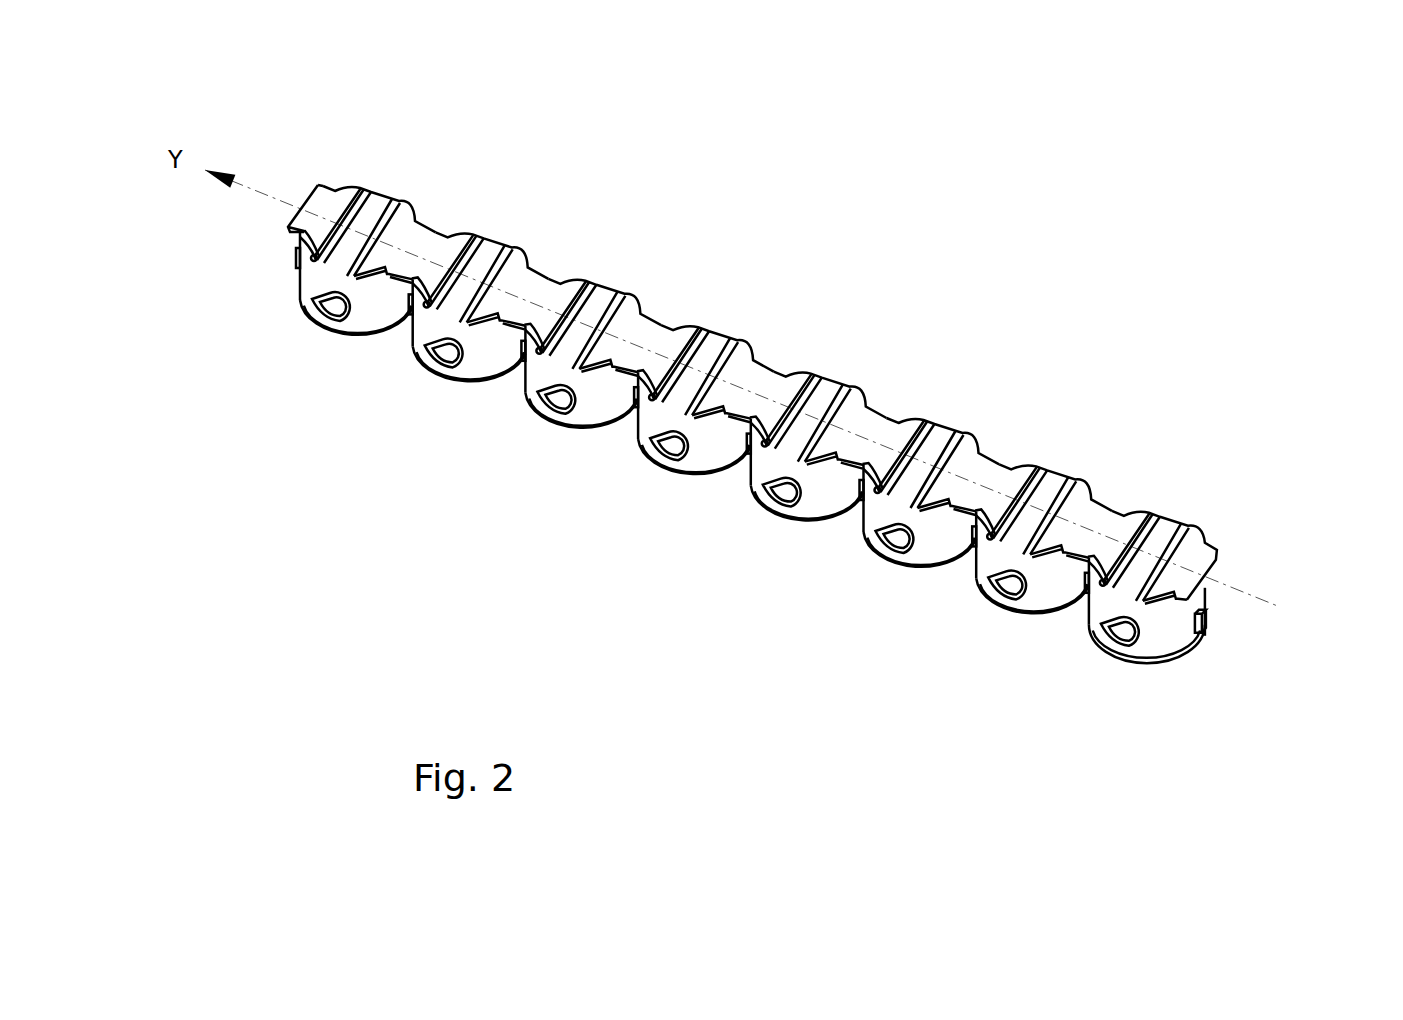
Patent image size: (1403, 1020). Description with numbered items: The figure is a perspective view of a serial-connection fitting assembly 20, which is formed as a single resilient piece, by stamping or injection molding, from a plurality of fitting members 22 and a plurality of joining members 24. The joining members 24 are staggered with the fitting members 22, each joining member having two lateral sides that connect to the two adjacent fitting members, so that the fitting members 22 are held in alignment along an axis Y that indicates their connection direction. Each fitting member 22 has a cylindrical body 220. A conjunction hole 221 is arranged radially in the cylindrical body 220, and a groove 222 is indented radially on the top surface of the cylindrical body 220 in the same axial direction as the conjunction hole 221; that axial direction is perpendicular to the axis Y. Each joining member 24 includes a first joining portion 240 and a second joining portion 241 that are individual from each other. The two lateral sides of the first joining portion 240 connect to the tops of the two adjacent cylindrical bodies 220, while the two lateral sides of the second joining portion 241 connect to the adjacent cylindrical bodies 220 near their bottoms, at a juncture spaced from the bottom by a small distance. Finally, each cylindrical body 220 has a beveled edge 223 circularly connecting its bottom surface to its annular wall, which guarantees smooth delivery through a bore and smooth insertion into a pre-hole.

The serial-connection fitting assembly 20 is at (1083, 188).
The fitting member 22 is at (364, 345).
The joining member 24 is at (1007, 453).
The first joining portion 240 is at (994, 456).
The second joining portion 241 is at (969, 495).
The cylindrical body 220 is at (1225, 612).
The conjunction hole 221 is at (1113, 652).
The groove 222 is at (1158, 530).
The beveled edge 223 is at (1168, 658).